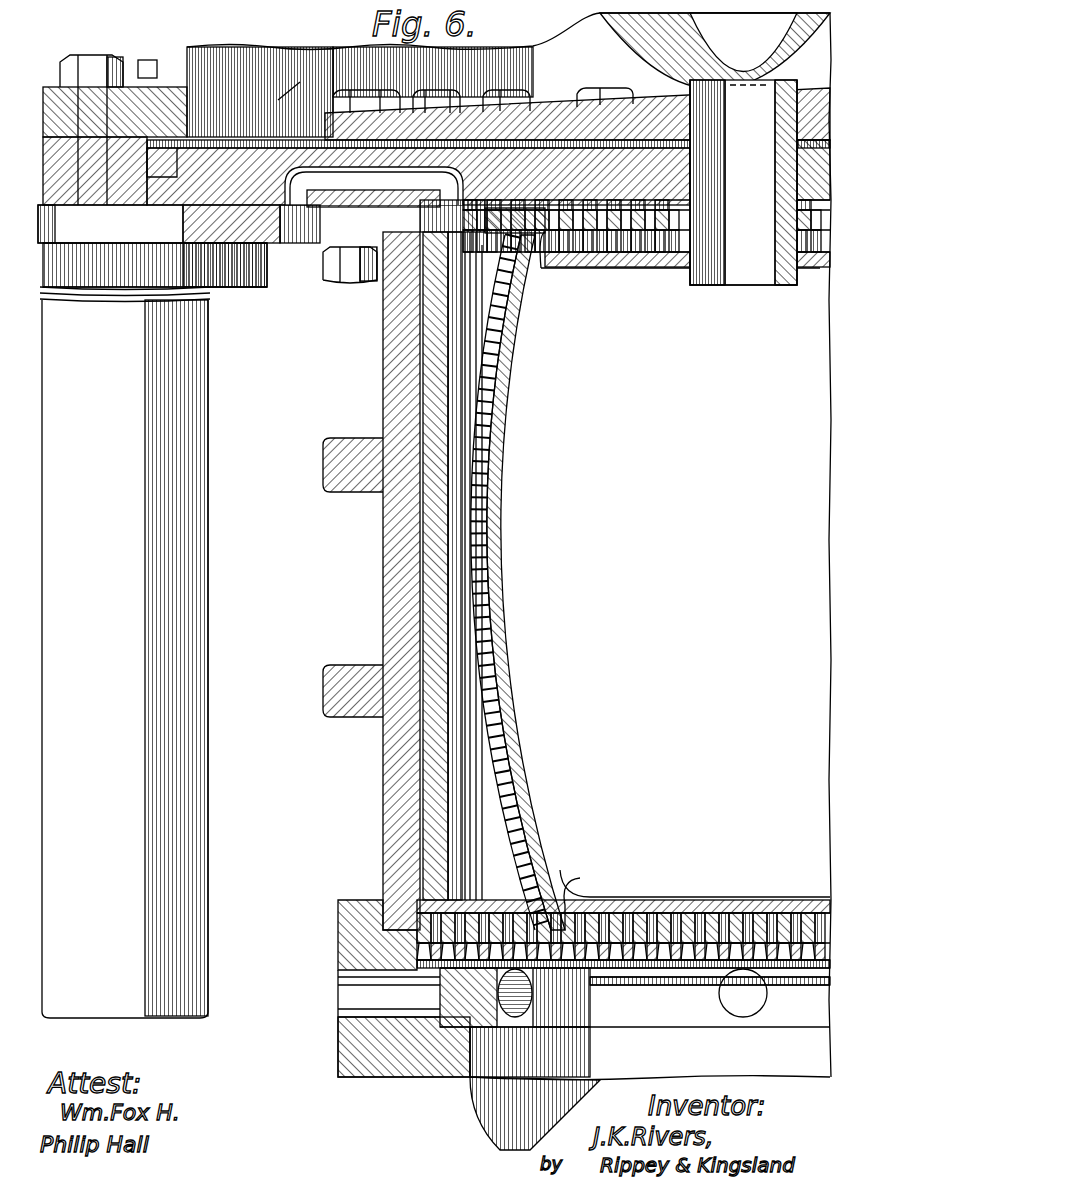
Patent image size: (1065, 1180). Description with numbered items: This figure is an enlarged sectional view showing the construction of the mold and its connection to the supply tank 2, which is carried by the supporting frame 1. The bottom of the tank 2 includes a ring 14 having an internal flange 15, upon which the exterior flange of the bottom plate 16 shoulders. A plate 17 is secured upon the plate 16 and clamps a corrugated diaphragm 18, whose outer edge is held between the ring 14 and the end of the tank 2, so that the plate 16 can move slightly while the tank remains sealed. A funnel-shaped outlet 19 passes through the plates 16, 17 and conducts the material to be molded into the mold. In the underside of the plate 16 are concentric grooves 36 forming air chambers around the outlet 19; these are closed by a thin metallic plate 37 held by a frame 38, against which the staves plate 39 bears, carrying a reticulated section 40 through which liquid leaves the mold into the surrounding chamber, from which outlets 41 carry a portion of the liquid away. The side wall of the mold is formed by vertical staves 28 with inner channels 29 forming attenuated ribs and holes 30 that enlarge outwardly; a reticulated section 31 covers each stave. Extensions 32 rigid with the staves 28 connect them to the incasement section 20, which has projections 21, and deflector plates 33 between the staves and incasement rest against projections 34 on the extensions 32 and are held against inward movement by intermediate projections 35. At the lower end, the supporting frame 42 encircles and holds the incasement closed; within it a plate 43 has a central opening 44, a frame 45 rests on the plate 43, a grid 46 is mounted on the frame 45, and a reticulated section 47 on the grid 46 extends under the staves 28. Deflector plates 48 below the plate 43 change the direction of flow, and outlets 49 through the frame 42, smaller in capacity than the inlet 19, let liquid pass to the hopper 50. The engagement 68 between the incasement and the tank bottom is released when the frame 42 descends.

The supporting frame 1 is at (125, 652).
The tank 2 is at (207, 55).
The ring 14 is at (78, 203).
The internal flange 15 is at (150, 203).
The bottom plate 16 is at (488, 191).
The plate 17 is at (632, 100).
The diaphragm 18 is at (280, 100).
The funnel-shaped outlet 19 is at (715, 51).
The incasement section 20 is at (383, 380).
The projections 21 is at (342, 494).
The staves 28 is at (480, 372).
The vertical channels 29 is at (508, 418).
The holes 30 is at (530, 446).
The reticulated material section 31 is at (492, 512).
The extensions 32 is at (423, 563).
The deflector plates 33 is at (490, 598).
The projections 34 is at (495, 582).
The intermediate projections 35 is at (510, 240).
The concentric grooves 36 is at (583, 225).
The thin metallic plate 37 is at (638, 225).
The frame 38 is at (590, 268).
The staves plate 39 is at (641, 268).
The reticulated section 40 is at (628, 268).
The outlets 41 is at (343, 205).
The supporting frame 42 is at (338, 940).
The plate 43 is at (526, 997).
The central opening 44 is at (722, 970).
The frame 45 is at (615, 912).
The grid 46 is at (668, 915).
The reticulated section 47 is at (742, 915).
The deflector plates 48 is at (665, 977).
The outlets 49 is at (375, 1000).
The hopper 50 is at (480, 1125).
The engagement 68 is at (358, 308).